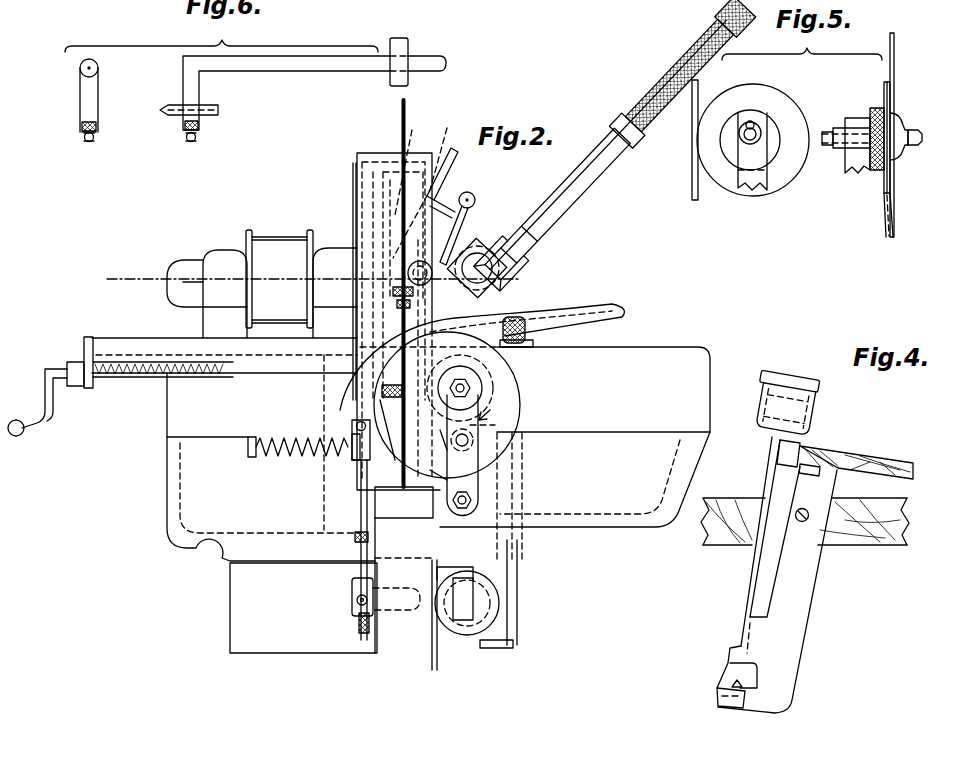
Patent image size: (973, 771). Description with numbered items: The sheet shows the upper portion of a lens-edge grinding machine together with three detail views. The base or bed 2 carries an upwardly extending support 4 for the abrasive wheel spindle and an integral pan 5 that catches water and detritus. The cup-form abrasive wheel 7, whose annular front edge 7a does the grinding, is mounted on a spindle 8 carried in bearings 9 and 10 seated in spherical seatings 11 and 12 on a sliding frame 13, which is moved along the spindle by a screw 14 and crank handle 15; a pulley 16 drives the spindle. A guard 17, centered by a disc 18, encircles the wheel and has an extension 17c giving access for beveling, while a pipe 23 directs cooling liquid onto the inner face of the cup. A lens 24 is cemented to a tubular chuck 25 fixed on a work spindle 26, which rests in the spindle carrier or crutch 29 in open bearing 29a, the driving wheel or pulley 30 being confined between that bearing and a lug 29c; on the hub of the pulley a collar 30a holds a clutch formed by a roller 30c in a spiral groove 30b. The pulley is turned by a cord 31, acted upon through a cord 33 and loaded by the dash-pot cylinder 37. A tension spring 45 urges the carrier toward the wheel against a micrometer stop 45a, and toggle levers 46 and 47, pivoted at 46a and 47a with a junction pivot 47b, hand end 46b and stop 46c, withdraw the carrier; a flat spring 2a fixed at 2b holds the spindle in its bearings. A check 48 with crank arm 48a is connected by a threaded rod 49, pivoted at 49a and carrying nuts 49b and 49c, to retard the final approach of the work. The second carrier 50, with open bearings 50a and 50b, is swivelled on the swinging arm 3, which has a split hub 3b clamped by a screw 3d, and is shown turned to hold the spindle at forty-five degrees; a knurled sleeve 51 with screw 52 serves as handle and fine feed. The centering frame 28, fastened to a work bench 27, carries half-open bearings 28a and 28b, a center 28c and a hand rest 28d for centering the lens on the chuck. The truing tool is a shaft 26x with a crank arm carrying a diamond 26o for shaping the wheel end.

In FIG. 2, the base or bed 2 is at (303, 608).
In FIG. 2, the flat spring 2a is at (484, 382).
In FIG. 2, the spring fixing point 2b is at (447, 405).
In FIG. 2, the swinging arm or support 3 is at (520, 556).
In FIG. 2, the split hub 3b is at (518, 618).
In FIG. 2, the clamping screw 3d is at (530, 338).
In FIG. 2, the upwardly extending support 4 is at (245, 442).
In FIG. 2, the pan 5 is at (438, 454).
In FIG. 2, the abrasive wheel 7 is at (409, 166).
In FIG. 2, the front edge of the wheel 7a is at (428, 184).
In FIG. 2, the spindle 8 is at (128, 282).
In FIG. 2, the bearing 9 is at (335, 277).
In FIG. 2, the bearing 10 is at (225, 278).
In FIG. 2, the spherical seating 11 is at (225, 322).
In FIG. 2, the spherical seating 12 is at (335, 322).
In FIG. 2, the sliding frame 13 is at (220, 362).
In FIG. 2, the screw 14 is at (140, 378).
In FIG. 2, the crank handle 15 is at (22, 436).
In FIG. 2, the pulley 16 is at (279, 279).
In FIG. 2, the guard 17 is at (375, 153).
In FIG. 2, the guard extension 17c is at (458, 192).
In FIG. 2, the disc 18 is at (352, 166).
In FIG. 2, the pipe 23 is at (455, 156).
In FIG. 4, the lens or disc 24 is at (816, 376).
In FIG. 2, the tubular chuck 25 is at (505, 284).
In FIG. 4, the tubular chuck 25 is at (818, 392).
In FIG. 2, the spindle 26 is at (572, 182).
In FIG. 5, the spindle 26 is at (746, 154).
In FIG. 4, the spindle 26 is at (770, 466).
In FIG. 6, the diamond 26o is at (80, 110).
In FIG. 6, the shaft or spindle 26x is at (100, 79).
In FIG. 4, the work bench 27 is at (868, 532).
In FIG. 4, the frame or support 28 is at (777, 590).
In FIG. 4, the half open bearing 28a is at (790, 460).
In FIG. 4, the half open bearing 28b is at (750, 628).
In FIG. 4, the center 28c is at (728, 686).
In FIG. 4, the hand rest 28d is at (880, 458).
In FIG. 2, the spindle carrier or crutch 29 is at (500, 478).
In FIG. 2, the open bearing 29a is at (537, 407).
In FIG. 5, the lug 29c is at (772, 174).
In FIG. 2, the driving wheel or pulley 30 is at (475, 440).
In FIG. 5, the driving wheel or pulley 30 is at (766, 94).
In FIG. 5, the collar 30a is at (783, 167).
In FIG. 5, the spiral or eccentric groove 30b is at (745, 141).
In FIG. 5, the roller 30c is at (758, 124).
In FIG. 2, the cord 31 is at (406, 112).
In FIG. 5, the cord 31 is at (700, 98).
In FIG. 2, the cord 33 is at (409, 298).
In FIG. 2, the cylinder 37 is at (403, 594).
In FIG. 2, the tension spring 45 is at (290, 458).
In FIG. 2, the micrometer stop or abutment 45a is at (377, 392).
In FIG. 2, the toggle lever 46 is at (356, 494).
In FIG. 2, the pivot 46a is at (360, 474).
In FIG. 2, the hand end 46b is at (568, 312).
In FIG. 2, the stop 46c is at (497, 425).
In FIG. 2, the toggle lever 47 is at (482, 497).
In FIG. 2, the pivot 47a is at (478, 462).
In FIG. 2, the junction pivot 47b is at (405, 522).
In FIG. 2, the check 48 is at (352, 620).
In FIG. 2, the crank arm 48a is at (396, 616).
In FIG. 2, the threaded connecting rod 49 is at (358, 512).
In FIG. 2, the pivot 49a is at (356, 425).
In FIG. 2, the nut 49b is at (353, 544).
In FIG. 2, the nut 49c is at (366, 640).
In FIG. 2, the second spindle carrier or crutch 50 is at (545, 216).
In FIG. 2, the open bearing 50a is at (522, 252).
In FIG. 2, the open bearing 50b is at (620, 152).
In FIG. 2, the knurled sleeve 51 is at (668, 68).
In FIG. 2, the screw 52 is at (708, 22).